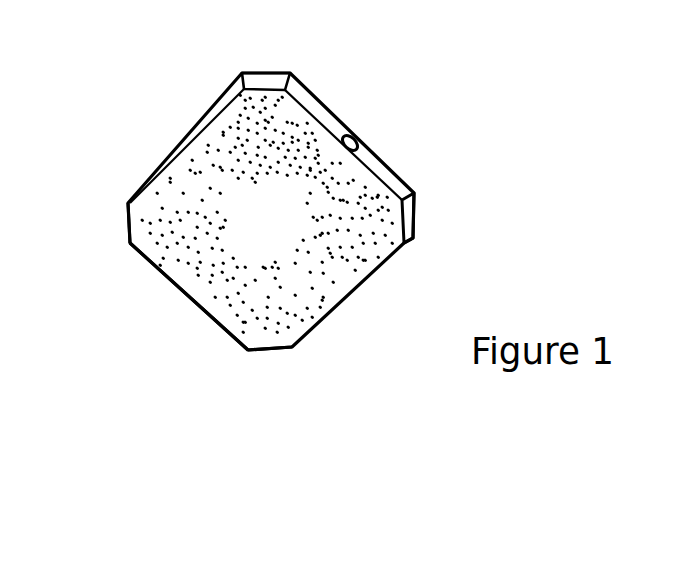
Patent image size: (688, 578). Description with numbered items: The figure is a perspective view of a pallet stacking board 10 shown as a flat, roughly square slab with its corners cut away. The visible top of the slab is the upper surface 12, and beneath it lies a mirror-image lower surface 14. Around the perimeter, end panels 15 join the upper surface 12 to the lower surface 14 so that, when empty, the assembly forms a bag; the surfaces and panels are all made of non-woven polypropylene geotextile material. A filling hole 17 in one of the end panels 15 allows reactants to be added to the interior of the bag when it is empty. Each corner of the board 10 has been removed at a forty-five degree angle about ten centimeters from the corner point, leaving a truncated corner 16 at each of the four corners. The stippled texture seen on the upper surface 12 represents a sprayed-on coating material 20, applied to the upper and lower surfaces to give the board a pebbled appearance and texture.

The pallet stacking board 10 is at (477, 154).
The upper surface 12 is at (277, 226).
The lower surface 14 is at (150, 143).
The end panels 15 is at (315, 105).
The truncated corner 16 is at (265, 80).
The filling hole 17 is at (358, 139).
The sprayed-on coating material 20 is at (174, 258).